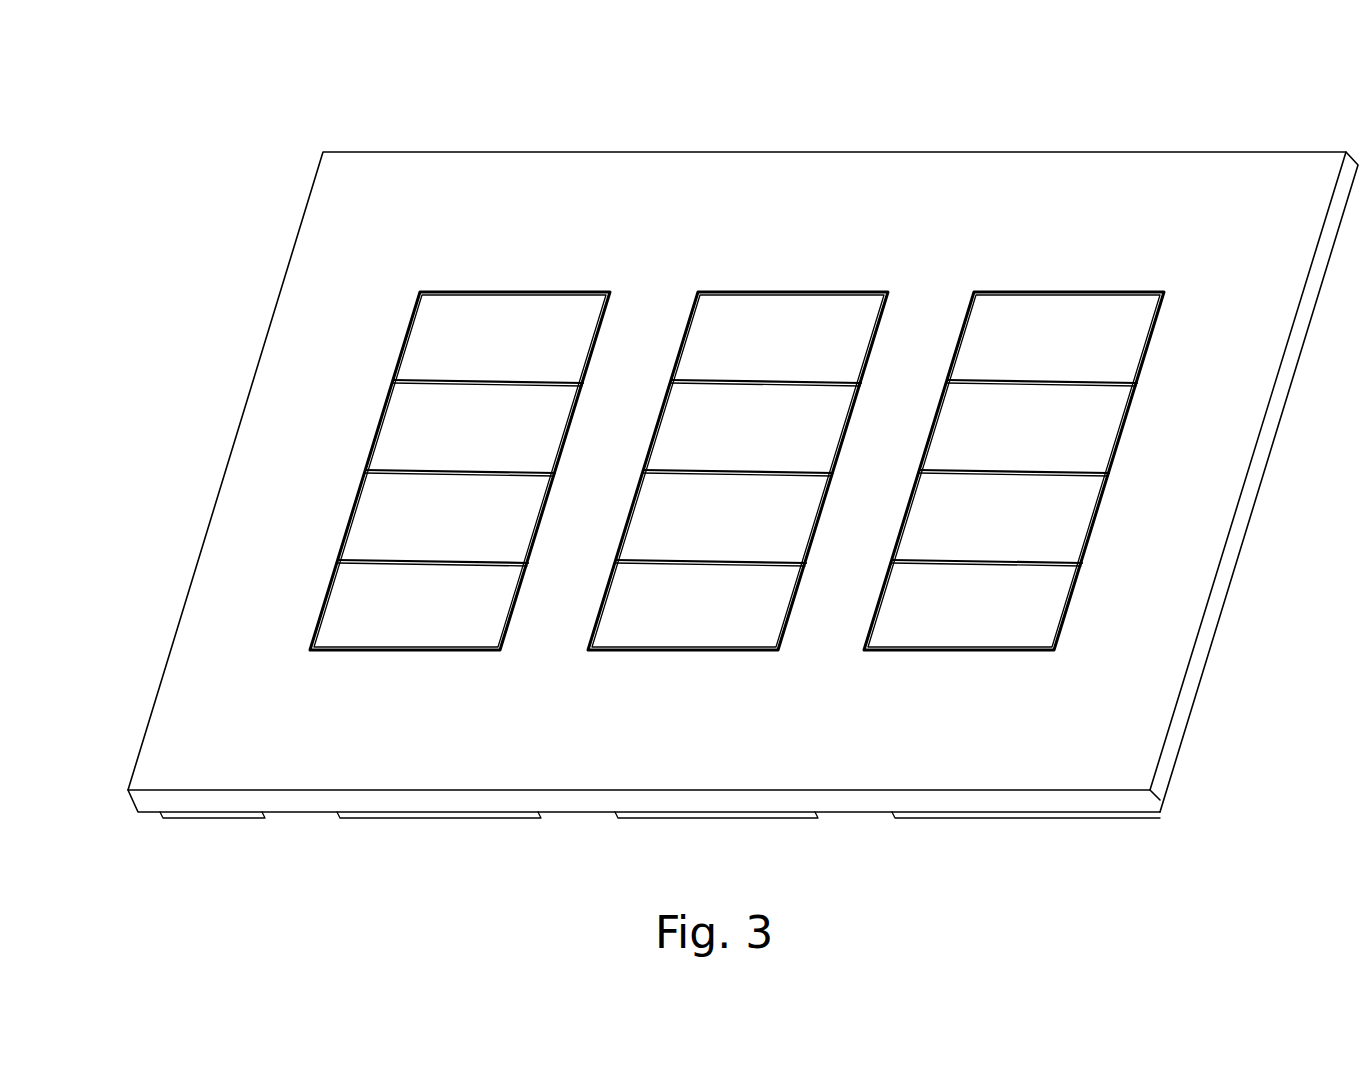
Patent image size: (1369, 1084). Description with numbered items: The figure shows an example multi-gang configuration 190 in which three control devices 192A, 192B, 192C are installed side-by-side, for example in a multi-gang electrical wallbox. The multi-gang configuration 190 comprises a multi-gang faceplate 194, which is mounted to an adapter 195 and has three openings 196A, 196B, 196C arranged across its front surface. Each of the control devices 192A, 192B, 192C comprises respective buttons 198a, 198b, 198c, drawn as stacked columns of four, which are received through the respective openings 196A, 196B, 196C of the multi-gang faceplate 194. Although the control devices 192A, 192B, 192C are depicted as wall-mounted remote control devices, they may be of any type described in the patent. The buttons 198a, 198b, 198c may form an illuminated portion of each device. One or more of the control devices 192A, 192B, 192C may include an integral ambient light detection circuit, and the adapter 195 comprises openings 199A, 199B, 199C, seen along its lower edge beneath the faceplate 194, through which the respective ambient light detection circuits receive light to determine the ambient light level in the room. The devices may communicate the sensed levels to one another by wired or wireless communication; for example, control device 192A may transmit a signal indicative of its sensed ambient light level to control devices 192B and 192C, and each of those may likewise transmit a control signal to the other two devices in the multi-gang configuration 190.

The multi-gang configuration 190 is at (203, 217).
The control device 192A is at (373, 336).
The control device 192B is at (651, 336).
The control device 192C is at (944, 336).
The multi-gang faceplate 194 is at (688, 741).
The adapter 195 is at (1018, 812).
The opening 196A is at (500, 292).
The opening 196B is at (800, 292).
The opening 196C is at (1078, 292).
The buttons 198a is at (525, 354).
The buttons 198b is at (805, 354).
The buttons 198c is at (1080, 351).
The opening 199A is at (299, 820).
The opening 199B is at (574, 822).
The opening 199C is at (856, 822).